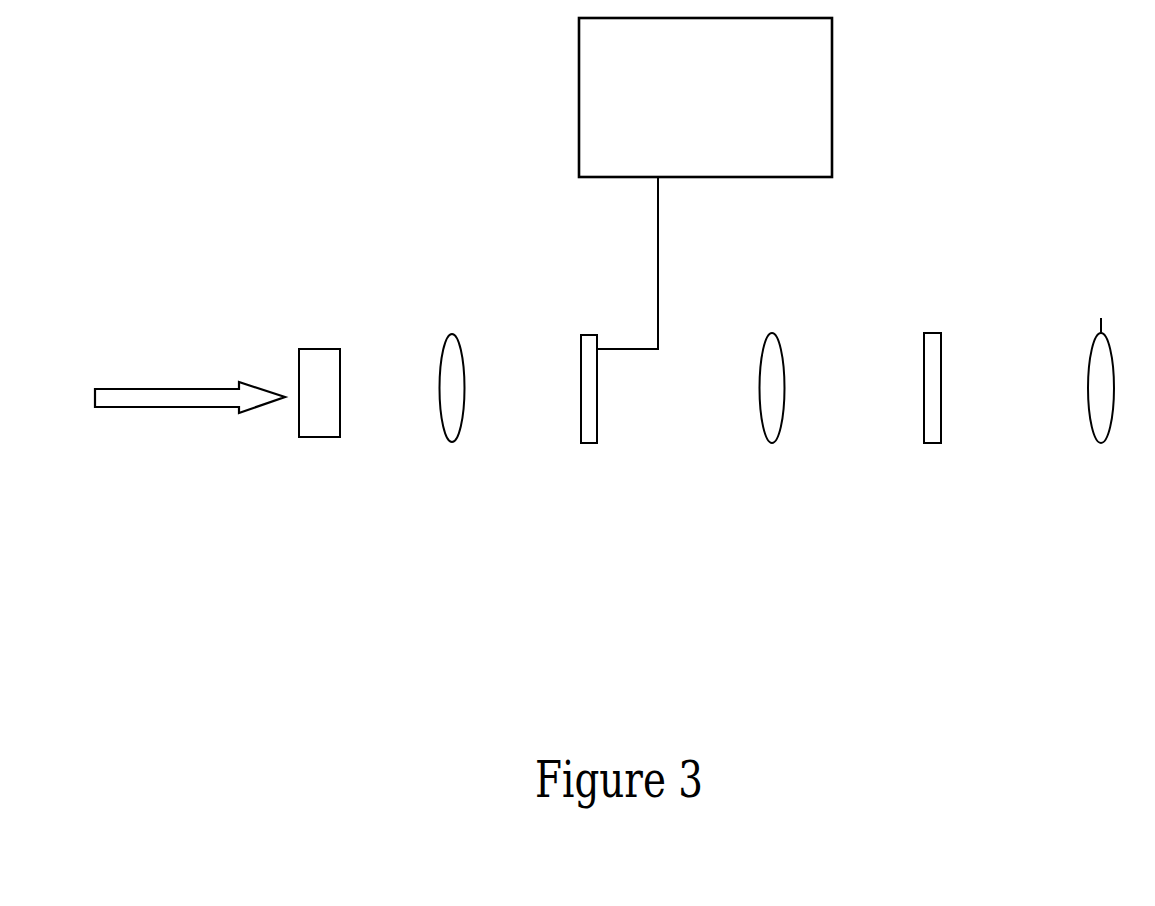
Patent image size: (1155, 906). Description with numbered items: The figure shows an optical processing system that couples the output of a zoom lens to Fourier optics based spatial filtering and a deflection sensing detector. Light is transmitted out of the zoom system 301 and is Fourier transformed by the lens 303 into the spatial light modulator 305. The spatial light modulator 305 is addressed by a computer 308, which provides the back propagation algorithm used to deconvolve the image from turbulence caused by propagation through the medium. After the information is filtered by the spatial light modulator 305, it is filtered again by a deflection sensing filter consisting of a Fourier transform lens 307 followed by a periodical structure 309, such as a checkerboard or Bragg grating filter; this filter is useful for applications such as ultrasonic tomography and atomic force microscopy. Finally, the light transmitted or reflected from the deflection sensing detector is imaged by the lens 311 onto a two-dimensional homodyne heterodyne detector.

The zoom system 301 is at (315, 437).
The lens 303 is at (453, 442).
The spatial light modulator 305 is at (588, 443).
The Fourier transform lens 307 is at (774, 442).
The computer 308 is at (705, 183).
The periodical structure 309 is at (932, 443).
The lens 311 is at (1103, 443).